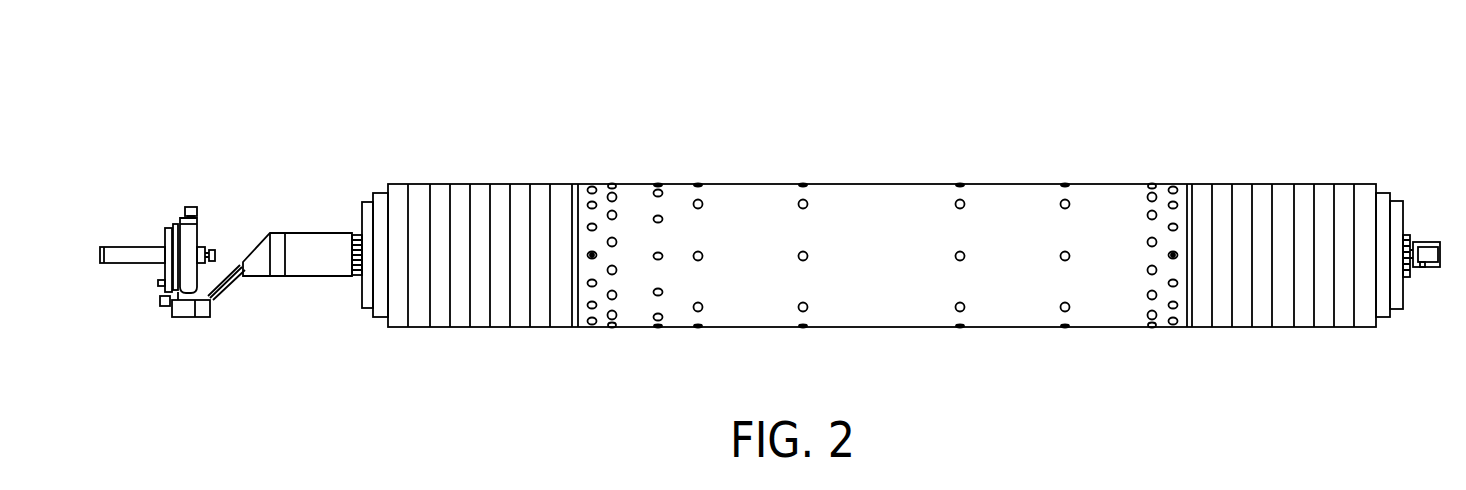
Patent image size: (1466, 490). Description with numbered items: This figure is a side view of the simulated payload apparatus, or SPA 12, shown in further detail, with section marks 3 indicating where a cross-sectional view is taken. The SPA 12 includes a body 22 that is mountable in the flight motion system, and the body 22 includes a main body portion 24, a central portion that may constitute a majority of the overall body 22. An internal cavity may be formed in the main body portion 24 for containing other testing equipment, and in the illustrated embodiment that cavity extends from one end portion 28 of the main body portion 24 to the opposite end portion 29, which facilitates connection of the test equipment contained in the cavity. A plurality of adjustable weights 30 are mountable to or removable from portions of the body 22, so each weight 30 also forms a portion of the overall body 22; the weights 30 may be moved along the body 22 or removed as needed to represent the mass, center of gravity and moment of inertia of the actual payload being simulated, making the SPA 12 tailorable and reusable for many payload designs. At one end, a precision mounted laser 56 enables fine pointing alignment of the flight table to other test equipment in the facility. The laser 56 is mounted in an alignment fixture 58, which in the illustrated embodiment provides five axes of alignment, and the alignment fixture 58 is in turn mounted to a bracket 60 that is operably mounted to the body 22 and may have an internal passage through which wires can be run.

The section line 3- 3 is at (1458, 175).
The simulated payload apparatus 12 is at (315, 98).
The body 22 is at (1147, 118).
The main body portion 24 is at (985, 170).
The end portion 28 is at (603, 329).
The opposite end portion 29 is at (1162, 329).
The adjustable weights 30 is at (398, 190).
The laser 56 is at (137, 247).
The alignment fixture 58 is at (181, 216).
The bracket 60 is at (313, 265).